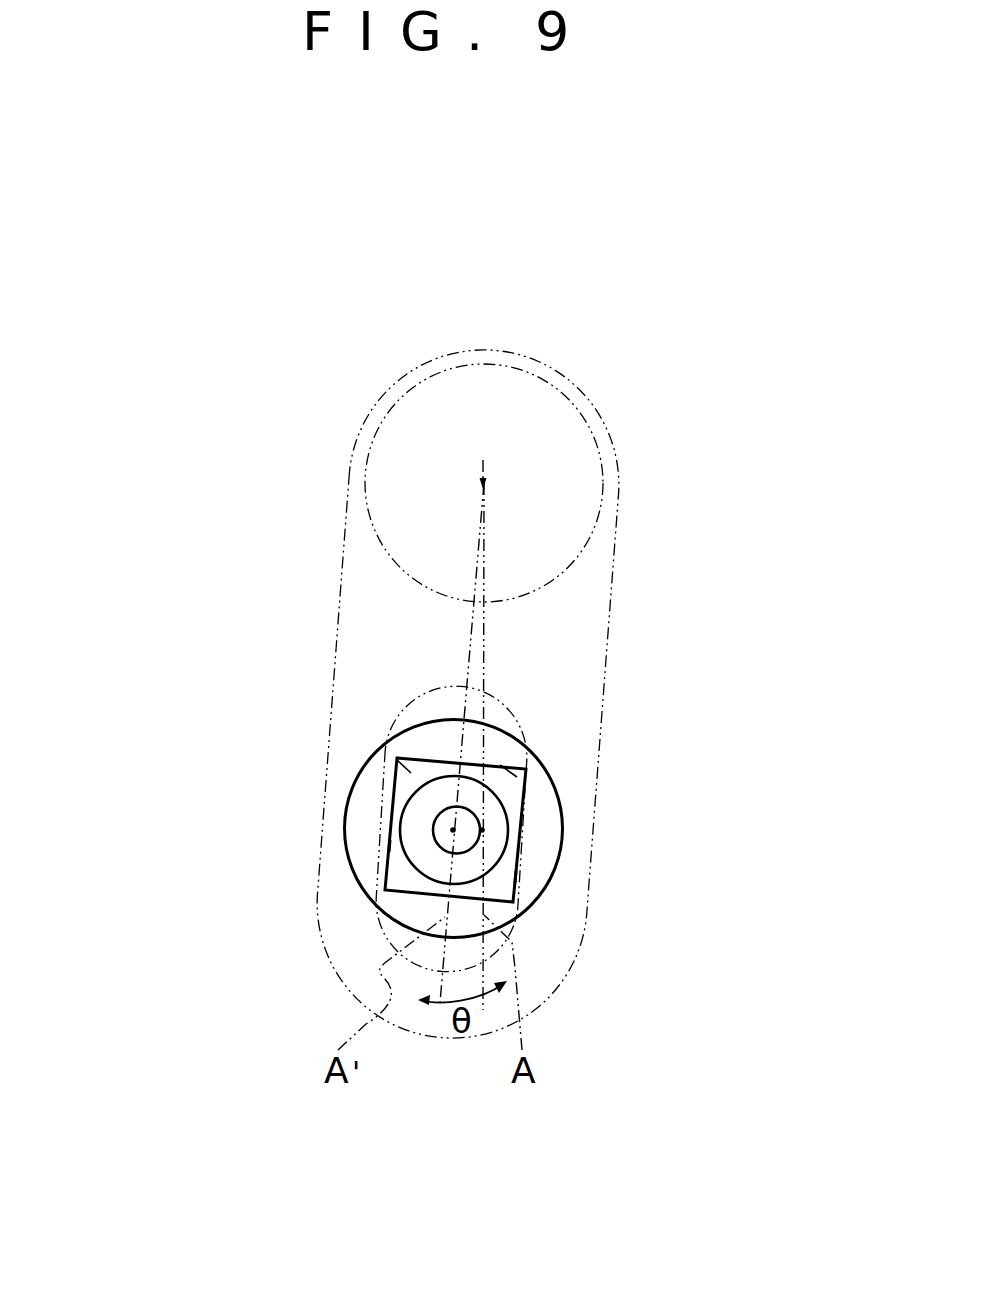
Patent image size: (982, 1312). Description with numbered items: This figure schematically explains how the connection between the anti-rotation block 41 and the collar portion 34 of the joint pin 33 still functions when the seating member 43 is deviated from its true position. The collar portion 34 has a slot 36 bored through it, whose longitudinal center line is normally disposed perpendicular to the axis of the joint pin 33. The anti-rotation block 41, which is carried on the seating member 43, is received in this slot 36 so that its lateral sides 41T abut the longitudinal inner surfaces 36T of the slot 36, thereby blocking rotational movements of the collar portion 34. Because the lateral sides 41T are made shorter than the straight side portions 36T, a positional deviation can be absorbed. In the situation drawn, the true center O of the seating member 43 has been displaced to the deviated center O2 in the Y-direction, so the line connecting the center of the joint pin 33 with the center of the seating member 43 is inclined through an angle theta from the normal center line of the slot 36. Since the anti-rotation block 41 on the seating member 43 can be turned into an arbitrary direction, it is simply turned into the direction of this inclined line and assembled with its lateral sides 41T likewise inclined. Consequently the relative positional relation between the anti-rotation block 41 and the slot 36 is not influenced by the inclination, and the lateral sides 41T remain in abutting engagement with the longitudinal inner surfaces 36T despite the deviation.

The joint pin 33 is at (555, 390).
The collar portion 34 is at (617, 527).
The slot 36 is at (443, 695).
The straight side portions of the slot 36T is at (408, 762).
The anti-rotation block 41 is at (510, 866).
The lateral sides of the anti-rotation block 41T is at (388, 846).
The seating member 43 is at (358, 820).
The center of the seating member O is at (482, 830).
The deviated center of the seating member O2 is at (453, 830).